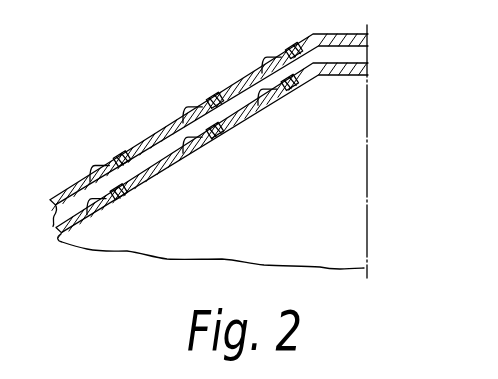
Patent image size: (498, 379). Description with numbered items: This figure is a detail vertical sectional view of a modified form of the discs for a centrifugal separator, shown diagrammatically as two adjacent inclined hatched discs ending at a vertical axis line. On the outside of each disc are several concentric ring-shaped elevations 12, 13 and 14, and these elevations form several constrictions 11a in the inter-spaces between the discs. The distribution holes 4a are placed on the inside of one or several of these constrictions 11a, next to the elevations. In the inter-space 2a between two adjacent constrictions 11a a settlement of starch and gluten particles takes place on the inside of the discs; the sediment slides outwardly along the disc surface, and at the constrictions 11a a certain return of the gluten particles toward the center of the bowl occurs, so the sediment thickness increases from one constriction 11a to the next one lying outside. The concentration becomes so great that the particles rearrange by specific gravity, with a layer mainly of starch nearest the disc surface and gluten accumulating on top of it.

The inter-space 2a is at (232, 106).
The distribution holes 4a is at (118, 157).
The constrictions 11a is at (80, 186).
The ring-shaped elevation 12 is at (97, 165).
The ring-shaped elevation 13 is at (193, 106).
The ring-shaped elevation 14 is at (270, 56).